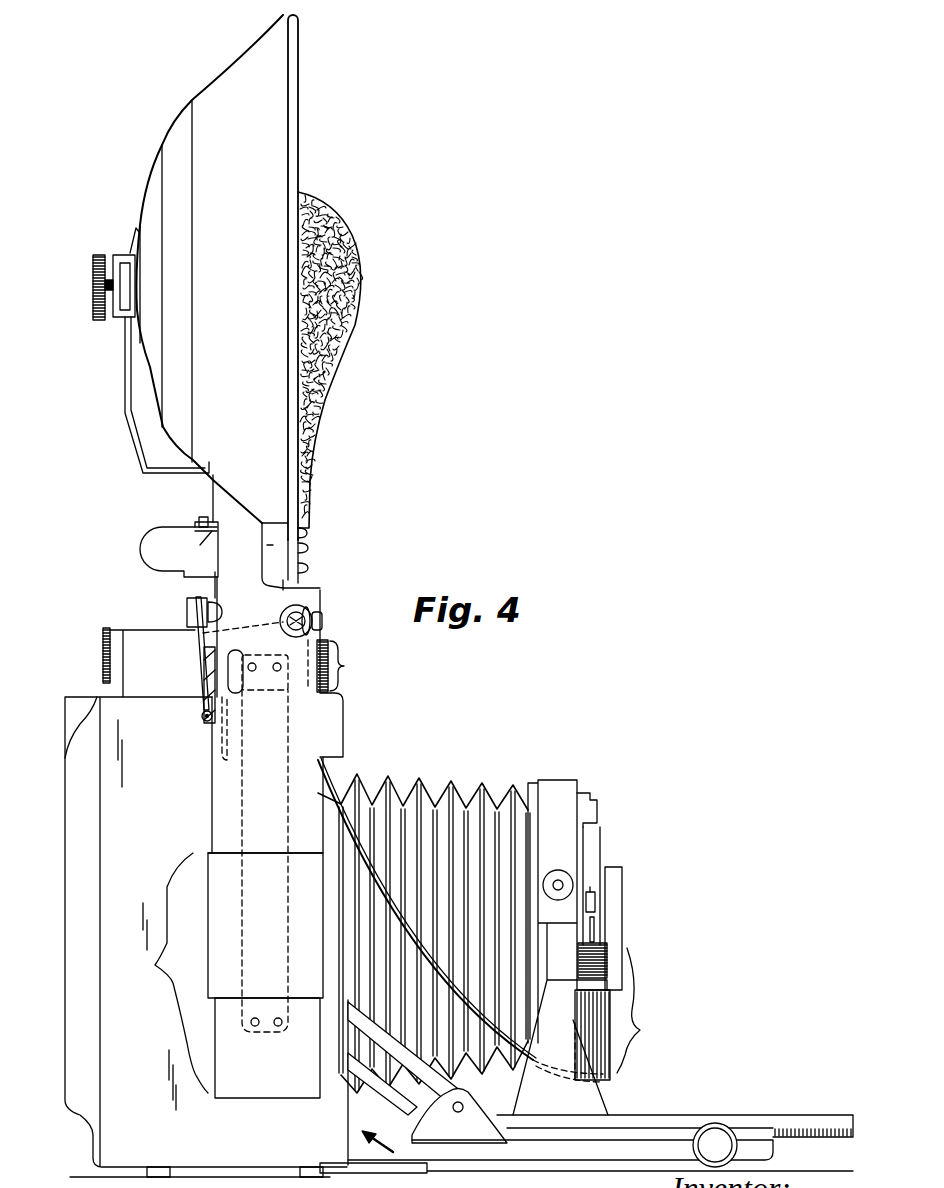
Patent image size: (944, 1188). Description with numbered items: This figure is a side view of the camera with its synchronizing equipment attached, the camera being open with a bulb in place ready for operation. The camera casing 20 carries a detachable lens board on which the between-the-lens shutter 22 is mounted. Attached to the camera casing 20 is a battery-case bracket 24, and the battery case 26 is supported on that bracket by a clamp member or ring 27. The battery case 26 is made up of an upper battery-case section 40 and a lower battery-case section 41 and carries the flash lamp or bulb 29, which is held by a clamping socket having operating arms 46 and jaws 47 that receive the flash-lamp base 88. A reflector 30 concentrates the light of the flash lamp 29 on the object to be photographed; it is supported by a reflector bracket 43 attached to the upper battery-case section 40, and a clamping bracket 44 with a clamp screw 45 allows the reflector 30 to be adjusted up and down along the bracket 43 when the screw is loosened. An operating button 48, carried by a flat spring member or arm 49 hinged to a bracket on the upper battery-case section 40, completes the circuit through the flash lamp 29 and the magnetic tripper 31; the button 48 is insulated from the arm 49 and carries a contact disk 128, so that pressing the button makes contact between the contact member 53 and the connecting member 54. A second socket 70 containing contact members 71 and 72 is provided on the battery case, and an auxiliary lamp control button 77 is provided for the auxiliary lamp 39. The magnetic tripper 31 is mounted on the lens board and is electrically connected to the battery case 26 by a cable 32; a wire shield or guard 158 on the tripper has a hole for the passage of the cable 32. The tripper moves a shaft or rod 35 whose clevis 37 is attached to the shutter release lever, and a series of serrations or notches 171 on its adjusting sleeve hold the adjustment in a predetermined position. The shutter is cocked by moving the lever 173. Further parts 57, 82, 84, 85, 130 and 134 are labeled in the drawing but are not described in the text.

The camera casing 20 is at (108, 707).
The between-the-lens shutter 22 is at (583, 850).
The battery-case bracket 24 is at (242, 935).
The battery case 26 is at (166, 973).
The clamp member or ring 27 is at (212, 890).
The flash lamp or bulb 29 is at (357, 272).
The reflector 30 is at (300, 163).
The magnetic tripper 31 is at (632, 970).
The cable 32 is at (333, 848).
The shaft or rod 35 is at (594, 935).
The clevis 37 is at (597, 911).
The auxiliary lamp 39 is at (353, 666).
The upper battery-case section 40 is at (212, 798).
The lower battery-case section 41 is at (240, 1090).
The reflector bracket 43 is at (125, 388).
The clamping bracket 44 is at (118, 253).
The clamp screw 45 is at (93, 286).
The operating arms 46 is at (152, 550).
The jaws 47 is at (308, 549).
The operating button 48 is at (187, 618).
The flat spring member or arm 49 is at (200, 652).
The contact member 53 is at (220, 602).
The connecting member 54 is at (250, 630).
The flange 57 is at (73, 729).
The second socket 70 is at (312, 623).
The contact member 71 is at (322, 617).
The contact member 72 is at (330, 645).
The auxiliary lamp control button 77 is at (240, 657).
The contact 82 is at (198, 523).
The contact spring 84 is at (199, 550).
The stud 85 is at (203, 517).
The flash-lamp base 88 is at (308, 569).
The contact disk 128 is at (221, 612).
The screw 130 is at (203, 718).
The slide 134 is at (205, 684).
The wire shield or guard 158 is at (607, 1080).
The serrations or notches 171 is at (580, 960).
The lever 173 is at (597, 803).